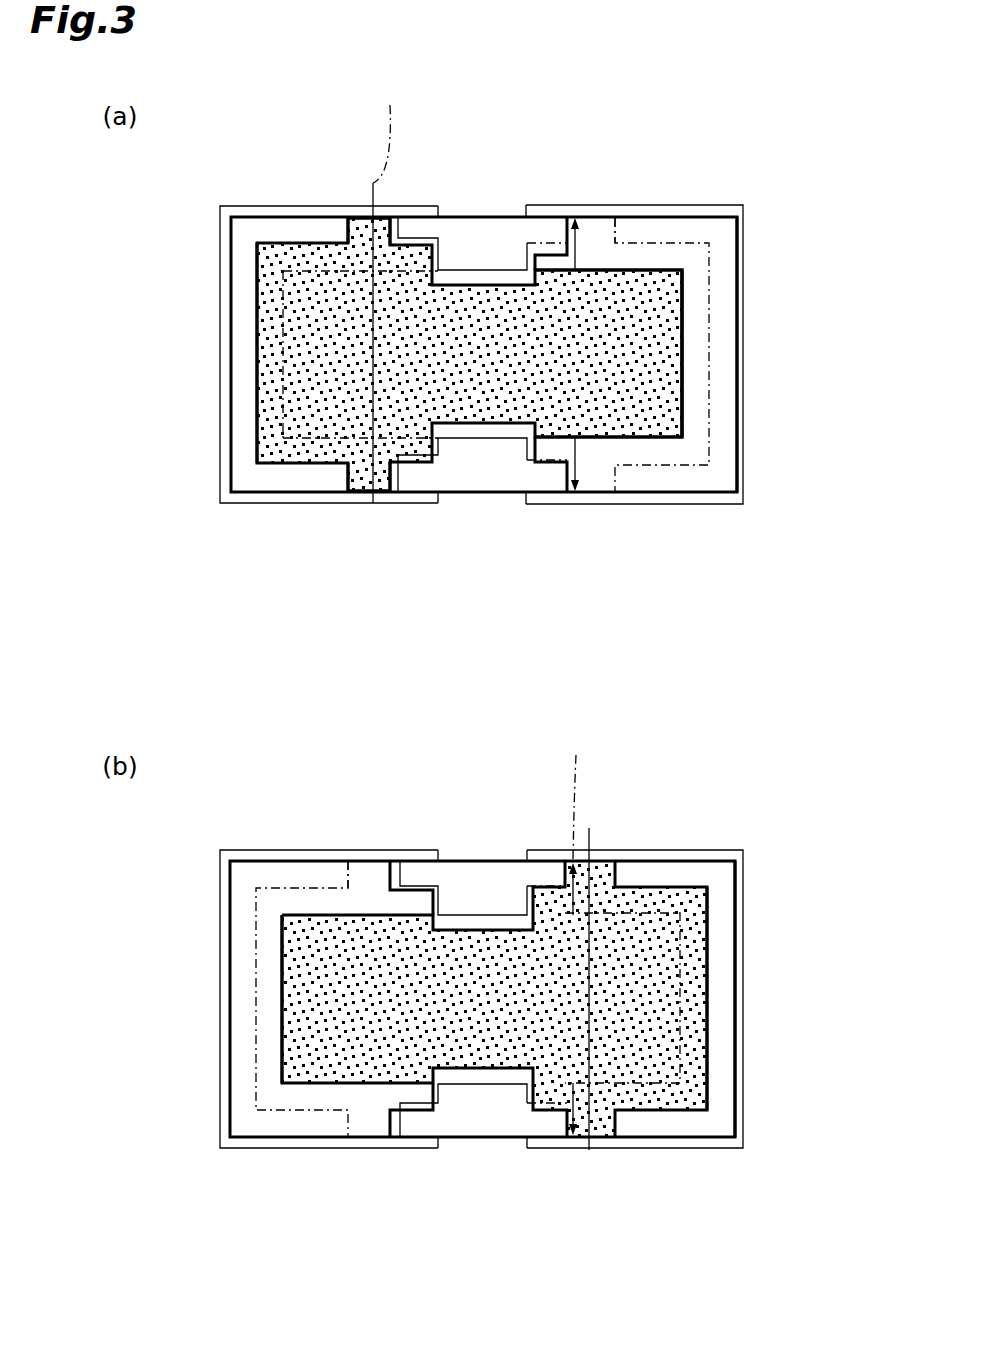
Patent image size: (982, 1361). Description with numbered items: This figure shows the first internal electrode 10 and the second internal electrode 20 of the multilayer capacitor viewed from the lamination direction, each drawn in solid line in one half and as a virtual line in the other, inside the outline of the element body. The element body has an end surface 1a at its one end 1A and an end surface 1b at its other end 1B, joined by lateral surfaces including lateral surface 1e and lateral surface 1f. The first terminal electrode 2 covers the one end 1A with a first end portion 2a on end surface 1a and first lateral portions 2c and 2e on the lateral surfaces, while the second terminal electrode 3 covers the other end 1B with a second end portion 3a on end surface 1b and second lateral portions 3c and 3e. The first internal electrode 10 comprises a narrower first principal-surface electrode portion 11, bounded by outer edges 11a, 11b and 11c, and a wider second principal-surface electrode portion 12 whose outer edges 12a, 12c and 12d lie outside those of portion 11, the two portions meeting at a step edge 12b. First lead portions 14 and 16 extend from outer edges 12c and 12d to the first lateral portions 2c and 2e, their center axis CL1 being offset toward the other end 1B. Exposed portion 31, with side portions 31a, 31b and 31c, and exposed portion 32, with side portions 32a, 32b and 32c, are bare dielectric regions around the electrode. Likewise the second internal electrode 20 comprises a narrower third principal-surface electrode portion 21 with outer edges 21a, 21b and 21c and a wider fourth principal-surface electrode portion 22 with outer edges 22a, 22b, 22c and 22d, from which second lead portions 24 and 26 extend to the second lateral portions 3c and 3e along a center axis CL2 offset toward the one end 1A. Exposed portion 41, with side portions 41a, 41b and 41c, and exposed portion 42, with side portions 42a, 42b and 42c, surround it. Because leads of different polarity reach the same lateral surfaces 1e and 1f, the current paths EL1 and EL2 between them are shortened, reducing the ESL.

The end surface 1a is at (229, 386).
The end surface 1b is at (740, 381).
The lateral surface 1e is at (523, 493).
The lateral surface 1f is at (530, 283).
The one end 1A is at (200, 340).
The other end 1B is at (765, 341).
The first terminal electrode 2 is at (215, 222).
The first end portion 2a is at (220, 303).
The first lateral portion 2c is at (335, 503).
The first lateral portion 2e is at (343, 212).
The second terminal electrode 3 is at (752, 222).
The second end portion 3a is at (746, 303).
The second lateral portion 3c is at (650, 504).
The second lateral portion 3e is at (617, 220).
The first internal electrode 10 is at (674, 260).
The first principal-surface electrode portion 11 is at (612, 340).
The outer edge 11a is at (684, 412).
The outer edge 11b is at (598, 445).
The outer edge 11c is at (585, 268).
The second principal-surface electrode portion 12 is at (318, 328).
The outer edge 12a is at (256, 411).
The connecting portion of internal electrode 12b is at (440, 245).
The outer edge 12c is at (262, 466).
The outer edge 12d is at (268, 235).
The first lead portion 14 is at (358, 484).
The first lead portion 16 is at (360, 227).
The second internal electrode 20 is at (712, 858).
The third principal-surface electrode portion 21 is at (317, 952).
The outer edge 21a is at (281, 1074).
The outer edge 21b is at (368, 1084).
The outer edge 21c is at (364, 912).
The fourth principal-surface electrode portion 22 is at (657, 945).
The outer edge 22a is at (708, 1070).
The outer edge 22b is at (518, 898).
The outer edge 22c is at (712, 1110).
The outer edge 22d is at (700, 880).
The second lead portion 24 is at (598, 1134).
The second lead portion 26 is at (603, 866).
The exposed portion 31 is at (240, 281).
The side portion 31a is at (244, 462).
The side portion 31b is at (300, 490).
The side portion 31c is at (308, 232).
The exposed portion 32 is at (720, 281).
The side portion 32a is at (719, 463).
The side portion 32b is at (476, 472).
The side portion 32c is at (476, 241).
The exposed portion 41 is at (724, 924).
The side portion 41a is at (710, 1041).
The side portion 41b is at (668, 1118).
The side portion 41c is at (627, 874).
The exposed portion 42 is at (240, 924).
The side portion 42a is at (257, 1046).
The side portion 42b is at (497, 1120).
The side portion 42c is at (495, 888).
The center axis CL1 is at (389, 287).
The center axis CL2 is at (577, 936).
The current path EL1 is at (503, 424).
The current path EL2 is at (483, 284).